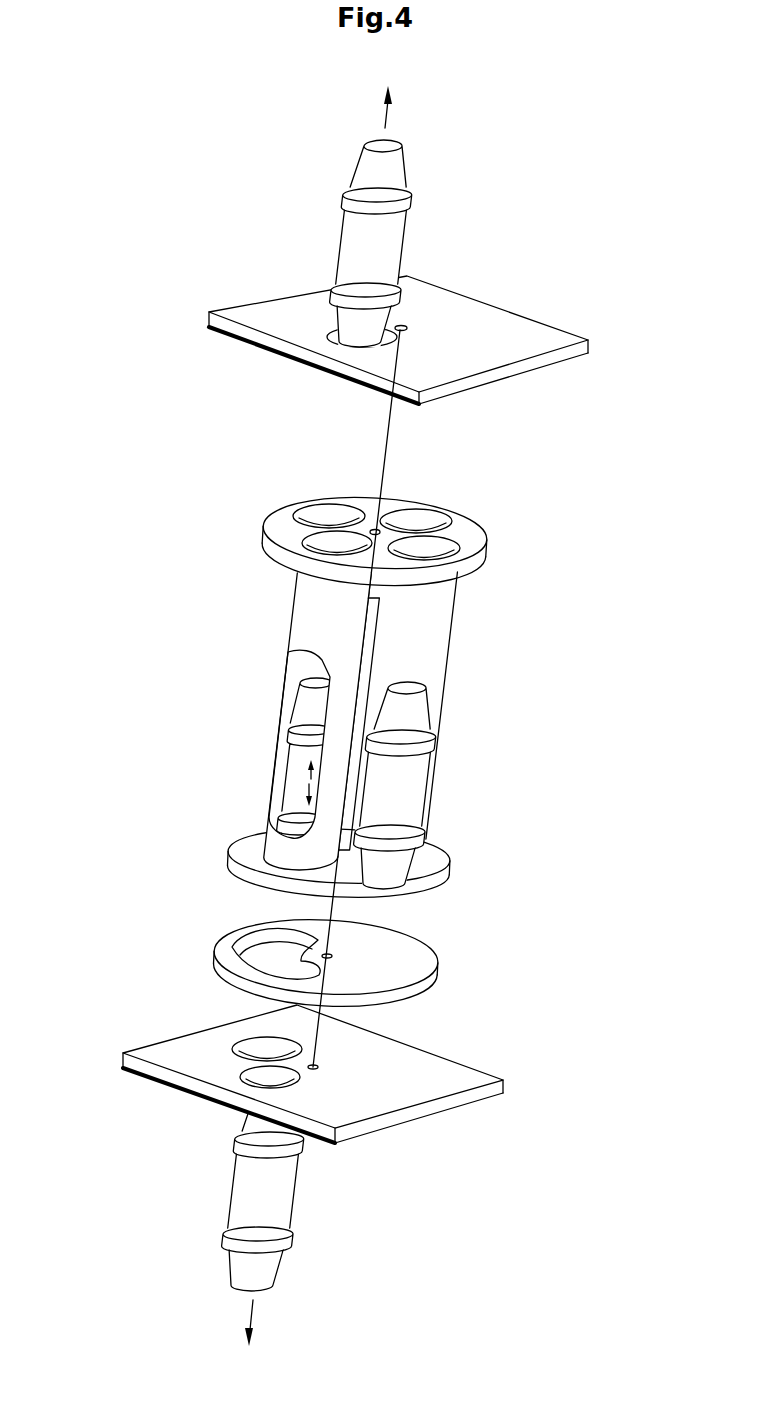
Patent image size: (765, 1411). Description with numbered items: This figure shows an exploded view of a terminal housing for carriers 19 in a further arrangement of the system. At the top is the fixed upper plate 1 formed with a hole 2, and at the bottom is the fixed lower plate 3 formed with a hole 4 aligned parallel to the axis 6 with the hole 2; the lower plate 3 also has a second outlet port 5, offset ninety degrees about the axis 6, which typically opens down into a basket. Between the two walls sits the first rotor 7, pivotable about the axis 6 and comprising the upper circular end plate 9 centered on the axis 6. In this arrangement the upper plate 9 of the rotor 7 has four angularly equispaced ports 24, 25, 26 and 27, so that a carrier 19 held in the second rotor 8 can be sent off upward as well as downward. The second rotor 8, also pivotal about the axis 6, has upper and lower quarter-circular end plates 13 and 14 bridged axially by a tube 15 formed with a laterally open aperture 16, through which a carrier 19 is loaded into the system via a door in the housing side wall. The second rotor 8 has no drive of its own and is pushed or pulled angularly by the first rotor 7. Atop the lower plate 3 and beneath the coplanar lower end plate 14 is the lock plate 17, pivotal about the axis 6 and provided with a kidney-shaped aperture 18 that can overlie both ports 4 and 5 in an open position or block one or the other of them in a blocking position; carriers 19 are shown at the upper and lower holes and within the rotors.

The upper plate 1 is at (288, 312).
The hole 2 is at (333, 330).
The lower plate 3 is at (300, 1026).
The hole 4 is at (270, 1053).
The second outlet port 5 is at (287, 1082).
The axis 6 is at (310, 1037).
The first rotor 7 is at (363, 478).
The second rotor 8 is at (350, 633).
The upper circular end plate 9 is at (280, 523).
The upper quarter-circular end plate 13 is at (282, 565).
The lower quarter-circular end plate 14 is at (242, 853).
The tube 15 is at (318, 618).
The aperture 16 is at (293, 665).
The lock plate 17 is at (330, 926).
The kidney-shaped aperture 18 is at (272, 952).
The carrier 19 is at (355, 228).
The port 24 is at (418, 523).
The port 25 is at (418, 550).
The port 26 is at (347, 538).
The port 27 is at (327, 512).